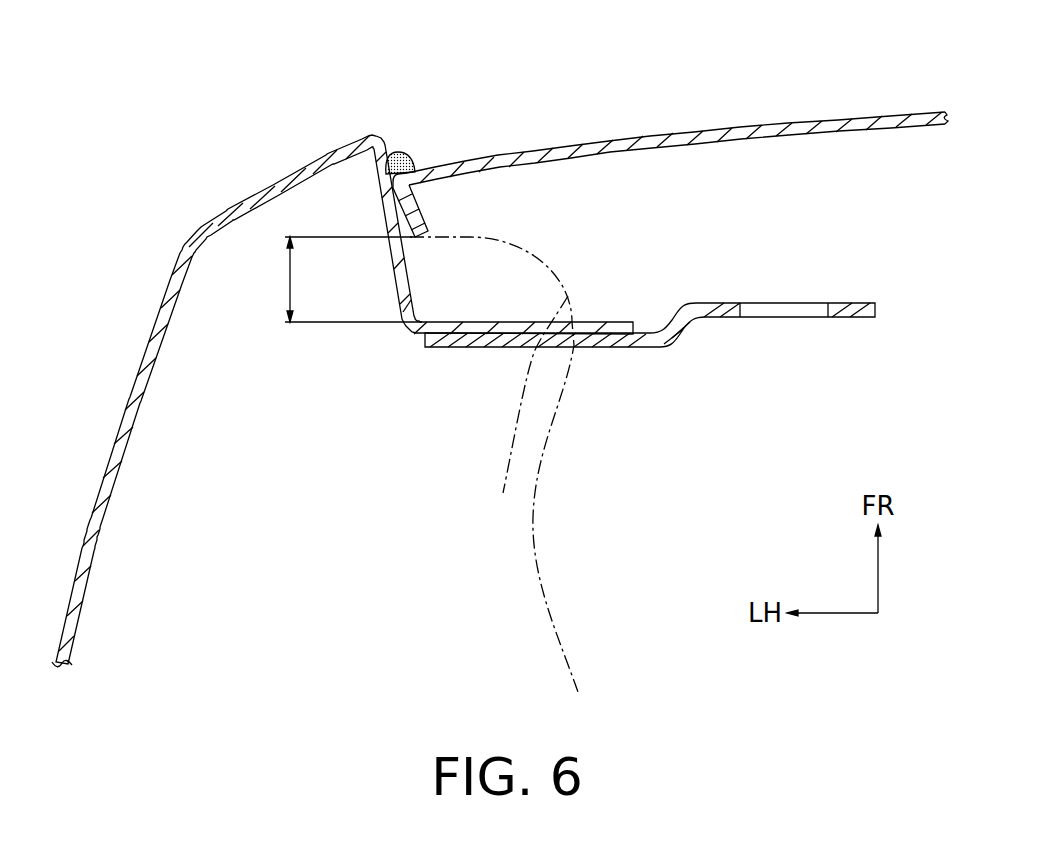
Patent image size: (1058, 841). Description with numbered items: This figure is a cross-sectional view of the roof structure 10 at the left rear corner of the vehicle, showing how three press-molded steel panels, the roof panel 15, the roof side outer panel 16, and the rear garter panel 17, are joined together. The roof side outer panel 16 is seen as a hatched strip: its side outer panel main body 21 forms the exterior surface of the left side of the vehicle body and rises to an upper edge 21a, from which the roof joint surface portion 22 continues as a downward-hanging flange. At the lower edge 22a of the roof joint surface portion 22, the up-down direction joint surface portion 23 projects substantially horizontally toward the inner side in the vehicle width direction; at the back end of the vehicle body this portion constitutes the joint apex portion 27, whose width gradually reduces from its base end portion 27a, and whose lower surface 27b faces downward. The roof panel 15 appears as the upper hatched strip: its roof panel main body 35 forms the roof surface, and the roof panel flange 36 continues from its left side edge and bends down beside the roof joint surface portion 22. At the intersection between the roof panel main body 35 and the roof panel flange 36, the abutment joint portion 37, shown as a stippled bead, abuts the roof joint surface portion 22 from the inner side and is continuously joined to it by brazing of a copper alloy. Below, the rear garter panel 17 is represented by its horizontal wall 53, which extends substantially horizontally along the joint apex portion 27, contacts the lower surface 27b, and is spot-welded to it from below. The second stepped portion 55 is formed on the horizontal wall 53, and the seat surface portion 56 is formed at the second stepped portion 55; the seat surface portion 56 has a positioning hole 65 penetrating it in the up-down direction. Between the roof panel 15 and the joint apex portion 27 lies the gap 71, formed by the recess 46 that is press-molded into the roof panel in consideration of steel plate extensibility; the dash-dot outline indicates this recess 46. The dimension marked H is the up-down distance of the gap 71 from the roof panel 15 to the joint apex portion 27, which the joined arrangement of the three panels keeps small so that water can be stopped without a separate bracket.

The roof structure 10 is at (372, 68).
The roof panel 15 is at (860, 104).
The roof side outer panel 16 is at (166, 276).
The rear garter panel 17 is at (458, 358).
The side outer panel main body 21 is at (214, 216).
The upper edge 21a is at (384, 145).
The roof joint surface portion 22 is at (408, 286).
The lower edge 22a is at (418, 318).
The up-down direction joint surface portion 23 is at (681, 330).
The joint apex portion 27 is at (512, 322).
The base end portion 27a is at (636, 330).
The lower surface 27b is at (503, 347).
The roof panel main body 35 is at (800, 123).
The roof panel flange 36 is at (413, 187).
The abutment joint portion 37 is at (392, 163).
The recess 46 is at (525, 414).
The horizontal wall 53 is at (553, 349).
The second stepped portion 55 is at (680, 317).
The seat surface portion 56 is at (850, 303).
The positioning hole 65 is at (807, 314).
The gap 71 is at (481, 286).